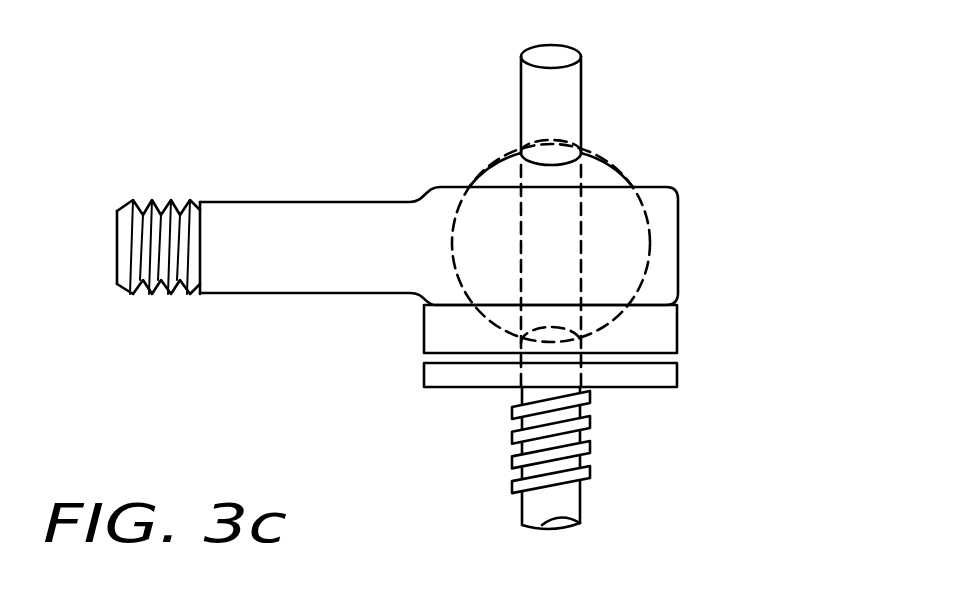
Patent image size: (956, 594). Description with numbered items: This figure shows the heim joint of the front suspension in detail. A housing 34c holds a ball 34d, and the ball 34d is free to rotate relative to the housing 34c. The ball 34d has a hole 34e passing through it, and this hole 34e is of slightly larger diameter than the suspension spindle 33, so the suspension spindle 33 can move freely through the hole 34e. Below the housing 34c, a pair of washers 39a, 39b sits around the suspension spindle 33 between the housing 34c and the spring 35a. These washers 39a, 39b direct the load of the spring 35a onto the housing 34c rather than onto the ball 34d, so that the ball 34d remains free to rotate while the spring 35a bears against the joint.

The suspension spindle 33 is at (582, 68).
The housing 34c is at (678, 193).
The ball 34d is at (610, 163).
The hole 34e is at (551, 160).
The washer 39a is at (678, 331).
The washer 39b is at (678, 378).
The spring 35a is at (591, 451).